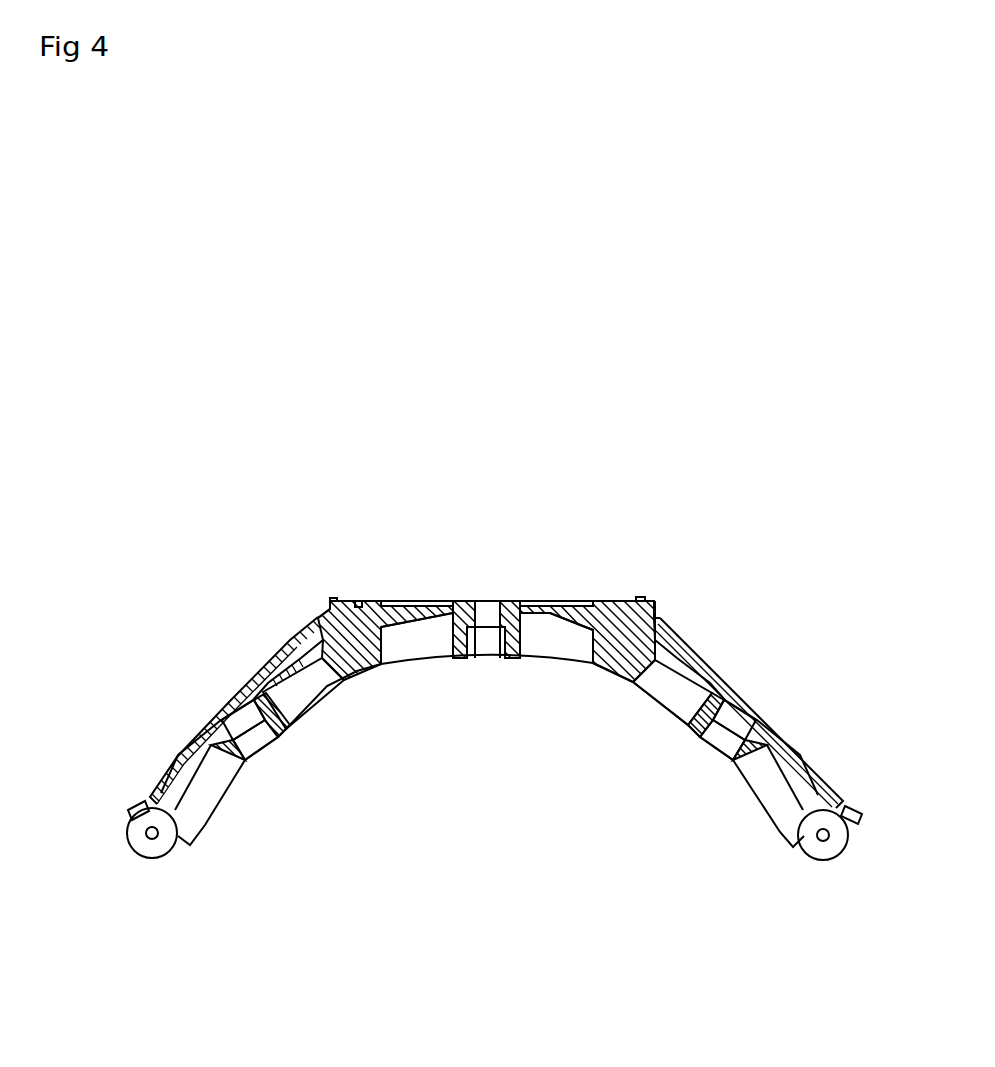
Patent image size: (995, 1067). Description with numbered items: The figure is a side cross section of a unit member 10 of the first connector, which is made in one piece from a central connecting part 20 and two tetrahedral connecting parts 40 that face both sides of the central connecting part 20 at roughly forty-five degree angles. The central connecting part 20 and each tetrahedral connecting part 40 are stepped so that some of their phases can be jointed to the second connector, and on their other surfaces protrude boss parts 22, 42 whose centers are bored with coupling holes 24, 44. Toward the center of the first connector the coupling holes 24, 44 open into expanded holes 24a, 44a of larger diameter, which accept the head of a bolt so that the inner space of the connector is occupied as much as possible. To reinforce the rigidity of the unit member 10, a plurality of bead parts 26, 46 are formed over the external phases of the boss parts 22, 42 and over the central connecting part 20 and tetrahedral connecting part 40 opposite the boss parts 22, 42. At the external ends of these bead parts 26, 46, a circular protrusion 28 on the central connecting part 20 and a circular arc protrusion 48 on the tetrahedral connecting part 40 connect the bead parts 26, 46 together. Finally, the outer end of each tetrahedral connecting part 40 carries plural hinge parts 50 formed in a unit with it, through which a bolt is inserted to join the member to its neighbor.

The unit member 10 is at (518, 490).
The central connecting part 20 is at (435, 598).
The boss part 22 is at (519, 648).
The coupling hole 24 is at (488, 600).
The expanded hole 24a is at (487, 650).
The bead part 26 is at (582, 598).
The circular protrusion 28 is at (618, 598).
The tetrahedral connecting part 40 is at (190, 734).
The boss part 42 is at (746, 780).
The coupling hole 44 is at (750, 713).
The expanded hole 44a is at (717, 741).
The bead part 46 is at (668, 703).
The circular arc protrusion 48 is at (845, 803).
The hinge part 50 is at (834, 858).